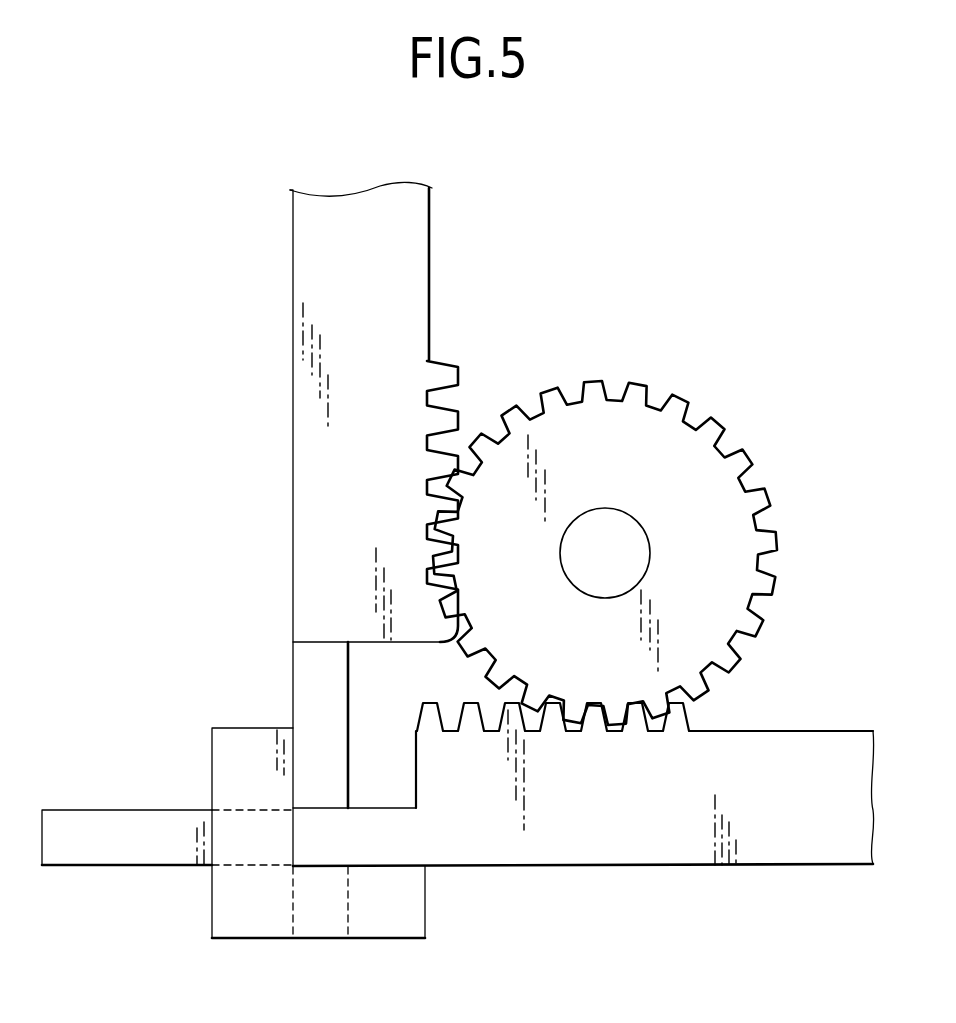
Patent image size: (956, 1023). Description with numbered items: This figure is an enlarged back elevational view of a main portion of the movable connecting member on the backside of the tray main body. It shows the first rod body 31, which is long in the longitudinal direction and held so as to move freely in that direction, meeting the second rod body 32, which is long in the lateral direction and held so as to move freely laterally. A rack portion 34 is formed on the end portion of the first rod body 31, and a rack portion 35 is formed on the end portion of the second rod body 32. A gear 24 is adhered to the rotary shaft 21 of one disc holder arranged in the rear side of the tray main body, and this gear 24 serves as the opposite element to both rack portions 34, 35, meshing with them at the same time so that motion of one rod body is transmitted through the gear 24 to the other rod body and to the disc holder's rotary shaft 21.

The rotary shaft 21 is at (617, 509).
The gear 24 is at (753, 495).
The first rod body 31 is at (291, 392).
The second rod body 32 is at (767, 867).
The rack portion 34 is at (455, 415).
The rack portion 35 is at (693, 723).